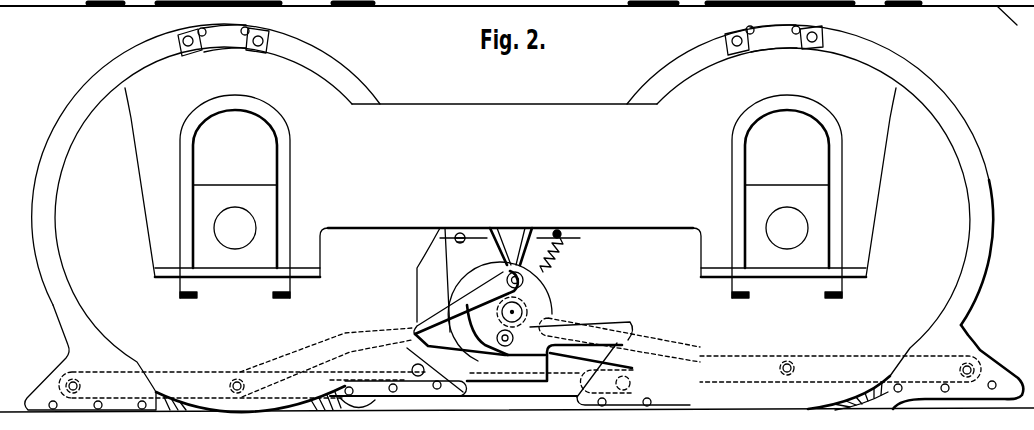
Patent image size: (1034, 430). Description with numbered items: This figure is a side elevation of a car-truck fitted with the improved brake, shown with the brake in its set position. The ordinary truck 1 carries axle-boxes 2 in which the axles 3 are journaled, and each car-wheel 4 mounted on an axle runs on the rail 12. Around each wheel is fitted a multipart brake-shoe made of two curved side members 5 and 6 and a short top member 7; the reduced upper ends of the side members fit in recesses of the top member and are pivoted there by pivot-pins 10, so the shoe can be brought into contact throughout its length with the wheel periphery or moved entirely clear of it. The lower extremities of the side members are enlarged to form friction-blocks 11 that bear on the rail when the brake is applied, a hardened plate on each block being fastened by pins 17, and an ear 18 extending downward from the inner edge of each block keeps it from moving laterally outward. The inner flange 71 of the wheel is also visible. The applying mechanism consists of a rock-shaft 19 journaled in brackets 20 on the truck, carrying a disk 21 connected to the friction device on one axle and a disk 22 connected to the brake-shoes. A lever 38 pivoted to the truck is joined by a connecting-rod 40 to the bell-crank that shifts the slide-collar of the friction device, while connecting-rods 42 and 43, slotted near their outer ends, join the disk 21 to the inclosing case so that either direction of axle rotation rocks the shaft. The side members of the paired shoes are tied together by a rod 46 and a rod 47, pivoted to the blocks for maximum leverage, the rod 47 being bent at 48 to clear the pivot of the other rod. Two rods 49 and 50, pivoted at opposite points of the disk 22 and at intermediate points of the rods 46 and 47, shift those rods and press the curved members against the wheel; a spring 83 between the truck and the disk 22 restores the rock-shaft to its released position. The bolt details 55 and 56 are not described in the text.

The truck 1 is at (558, 123).
The axle-box 2 is at (263, 197).
The axle 3 is at (233, 230).
The car-wheel 4 is at (93, 152).
The curved side member 5 is at (43, 202).
The curved side member 6 is at (375, 98).
The top member 7 is at (222, 38).
The pivot-pin 10 is at (187, 46).
The friction-block 11 is at (83, 367).
The rail 12 is at (992, 407).
The pin 17 is at (27, 6).
The ear 18 is at (104, 6).
The rock-shaft 19 is at (585, 236).
The bracket 20 is at (502, 265).
The disk 21 is at (514, 310).
The disk 22 is at (551, 228).
The lever 38 is at (518, 226).
The connecting-rod 40 is at (516, 268).
The connecting-rod 42 is at (438, 240).
The connecting-rod 43 is at (445, 337).
The rod 46 is at (548, 312).
The rod 47 is at (448, 235).
The bent part of rod 48 is at (594, 330).
The rod 49 is at (420, 268).
The rod 50 is at (706, 348).
The bolt 55 is at (198, 30).
The bolt 56 is at (249, 30).
The inner flange 71 is at (177, 395).
The spring 83 is at (566, 233).